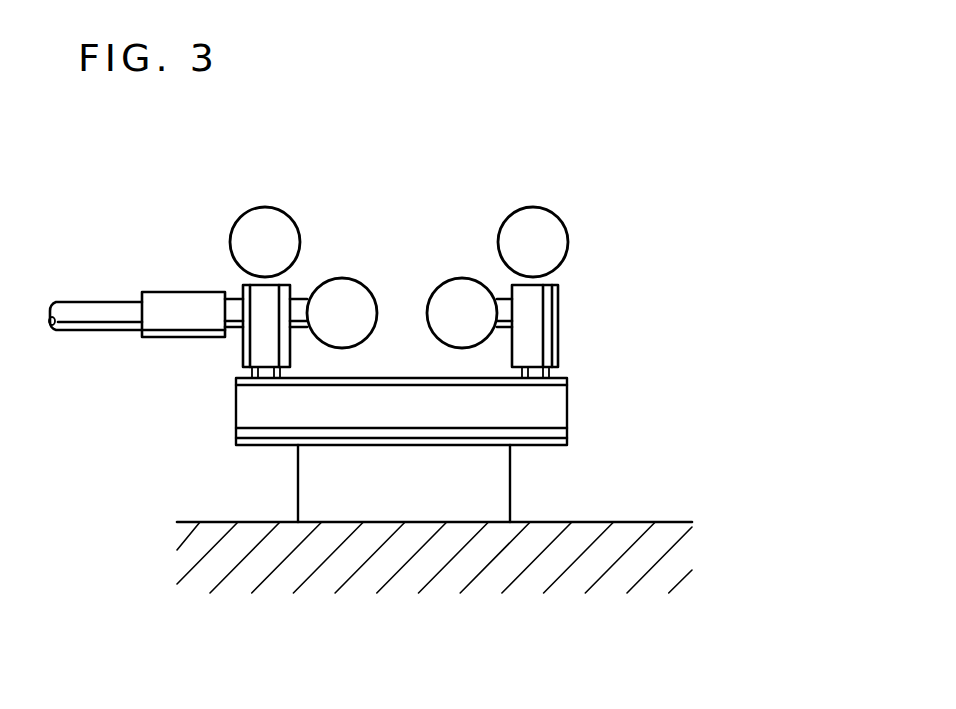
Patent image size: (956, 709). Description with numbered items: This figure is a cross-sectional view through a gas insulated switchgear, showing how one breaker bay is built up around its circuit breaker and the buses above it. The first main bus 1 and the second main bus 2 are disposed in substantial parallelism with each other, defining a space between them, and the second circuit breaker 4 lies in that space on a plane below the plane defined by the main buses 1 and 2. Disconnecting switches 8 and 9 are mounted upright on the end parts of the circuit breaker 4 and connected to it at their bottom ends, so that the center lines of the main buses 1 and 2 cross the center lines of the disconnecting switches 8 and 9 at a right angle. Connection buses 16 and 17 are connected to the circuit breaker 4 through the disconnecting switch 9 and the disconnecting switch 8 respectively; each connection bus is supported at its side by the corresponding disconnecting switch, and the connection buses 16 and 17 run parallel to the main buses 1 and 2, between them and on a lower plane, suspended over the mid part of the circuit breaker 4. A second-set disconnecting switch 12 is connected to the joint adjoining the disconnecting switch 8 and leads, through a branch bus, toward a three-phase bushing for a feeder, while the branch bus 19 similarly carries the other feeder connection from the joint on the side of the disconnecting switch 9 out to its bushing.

The first main bus 1 is at (537, 207).
The second main bus 2 is at (270, 212).
The second circuit breaker 4 is at (396, 388).
The disconnecting switch 8 is at (243, 290).
The disconnecting switch 9 is at (558, 293).
The disconnecting switch 12 is at (163, 292).
The connection bus 16 is at (457, 279).
The connection bus 17 is at (350, 282).
The branch bus 19 is at (92, 300).